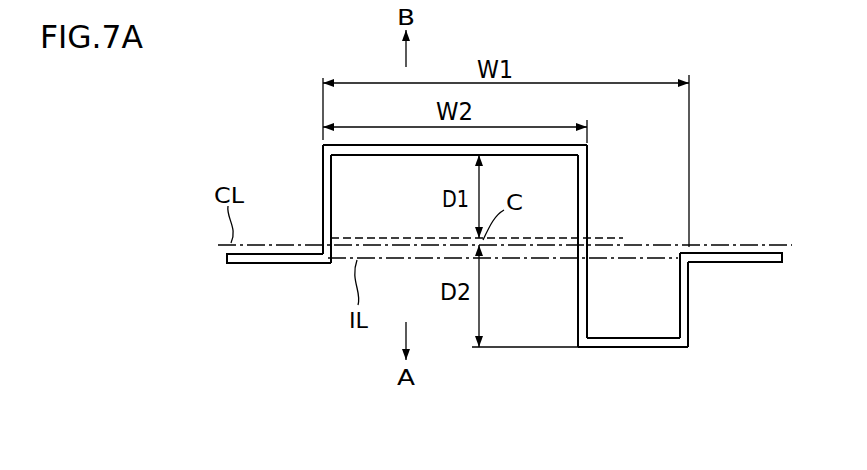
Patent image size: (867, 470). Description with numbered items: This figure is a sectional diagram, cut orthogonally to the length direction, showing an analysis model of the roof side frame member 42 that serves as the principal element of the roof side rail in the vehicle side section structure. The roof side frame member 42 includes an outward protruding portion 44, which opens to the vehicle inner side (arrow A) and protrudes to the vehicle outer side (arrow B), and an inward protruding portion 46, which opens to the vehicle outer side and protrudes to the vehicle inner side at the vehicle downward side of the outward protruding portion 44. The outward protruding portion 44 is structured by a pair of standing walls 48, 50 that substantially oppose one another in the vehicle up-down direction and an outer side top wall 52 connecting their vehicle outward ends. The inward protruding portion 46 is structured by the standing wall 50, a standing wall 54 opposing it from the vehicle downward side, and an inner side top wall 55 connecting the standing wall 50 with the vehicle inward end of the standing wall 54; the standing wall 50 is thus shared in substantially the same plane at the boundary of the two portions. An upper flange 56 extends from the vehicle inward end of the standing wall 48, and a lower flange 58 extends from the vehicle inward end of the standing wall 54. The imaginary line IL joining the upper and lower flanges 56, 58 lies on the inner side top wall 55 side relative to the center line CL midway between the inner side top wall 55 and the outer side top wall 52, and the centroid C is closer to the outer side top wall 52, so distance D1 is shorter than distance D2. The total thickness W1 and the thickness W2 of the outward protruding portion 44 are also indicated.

The roof side frame member 42 is at (767, 117).
The outward protruding portion 44 is at (593, 157).
The inward protruding portion 46 is at (693, 288).
The standing wall 48 is at (327, 205).
The standing wall 50 is at (583, 283).
The outer side top wall 52 is at (376, 150).
The standing wall 54 is at (690, 316).
The inner side top wall 55 is at (620, 340).
The upper flange 56 is at (270, 258).
The lower flange 58 is at (758, 252).